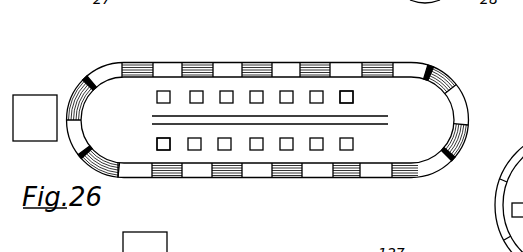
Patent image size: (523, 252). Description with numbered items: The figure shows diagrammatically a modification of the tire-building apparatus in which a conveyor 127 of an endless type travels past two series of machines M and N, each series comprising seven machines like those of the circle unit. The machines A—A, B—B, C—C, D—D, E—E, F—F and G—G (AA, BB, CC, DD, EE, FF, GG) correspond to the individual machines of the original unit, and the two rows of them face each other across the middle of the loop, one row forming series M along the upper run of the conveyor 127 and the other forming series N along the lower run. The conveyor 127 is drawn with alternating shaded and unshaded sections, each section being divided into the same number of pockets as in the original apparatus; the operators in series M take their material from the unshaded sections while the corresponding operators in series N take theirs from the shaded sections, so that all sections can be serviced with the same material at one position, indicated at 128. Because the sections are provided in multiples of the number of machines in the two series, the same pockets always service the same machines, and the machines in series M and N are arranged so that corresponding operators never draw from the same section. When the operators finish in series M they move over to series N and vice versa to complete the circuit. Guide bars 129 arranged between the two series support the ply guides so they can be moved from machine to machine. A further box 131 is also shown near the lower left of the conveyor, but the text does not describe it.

The conveyor 127 is at (447, 71).
The servicing position 128 is at (35, 97).
The guide bars 129 is at (363, 115).
The box 131 is at (122, 250).
The series of machines M is at (157, 97).
The series of machines N is at (157, 142).
The machines A—A AA is at (146, 205).
The machines B—B BB is at (183, 186).
The machines C—C CC is at (210, 208).
The machines D—D DD is at (247, 185).
The machines E—E EE is at (277, 208).
The machines F—F FF is at (312, 185).
The machines G—G GG is at (339, 208).